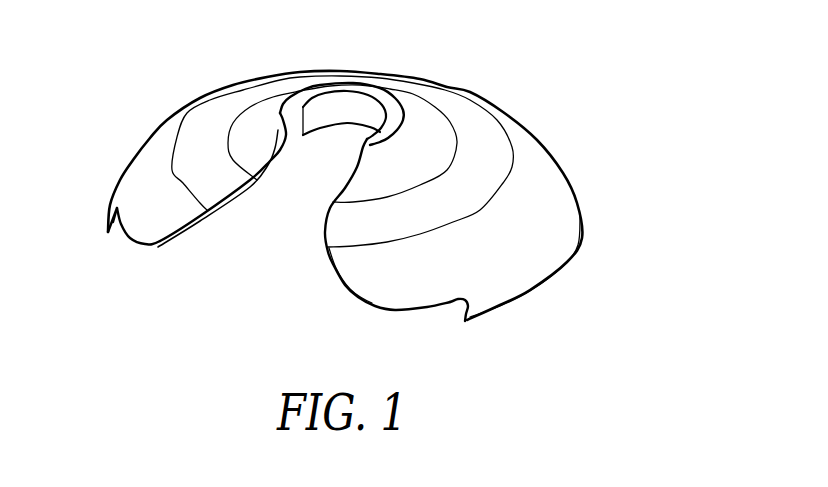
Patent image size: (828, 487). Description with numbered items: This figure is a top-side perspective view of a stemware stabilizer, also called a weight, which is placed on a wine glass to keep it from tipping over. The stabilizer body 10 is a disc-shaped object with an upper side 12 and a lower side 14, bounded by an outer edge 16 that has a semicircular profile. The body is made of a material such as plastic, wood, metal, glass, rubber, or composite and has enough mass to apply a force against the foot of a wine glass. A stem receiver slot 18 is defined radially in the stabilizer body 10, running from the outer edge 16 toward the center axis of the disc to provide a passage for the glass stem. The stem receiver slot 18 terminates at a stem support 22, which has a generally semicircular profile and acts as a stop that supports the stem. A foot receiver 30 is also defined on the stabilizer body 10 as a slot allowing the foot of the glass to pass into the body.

The stabilizer body 10 is at (553, 98).
The upper side 12 is at (205, 118).
The lower side 14 is at (129, 243).
The outer edge 16 is at (581, 239).
The stem receiver slot 18 is at (303, 180).
The stem support 22 is at (338, 102).
The foot receiver 30 is at (460, 308).